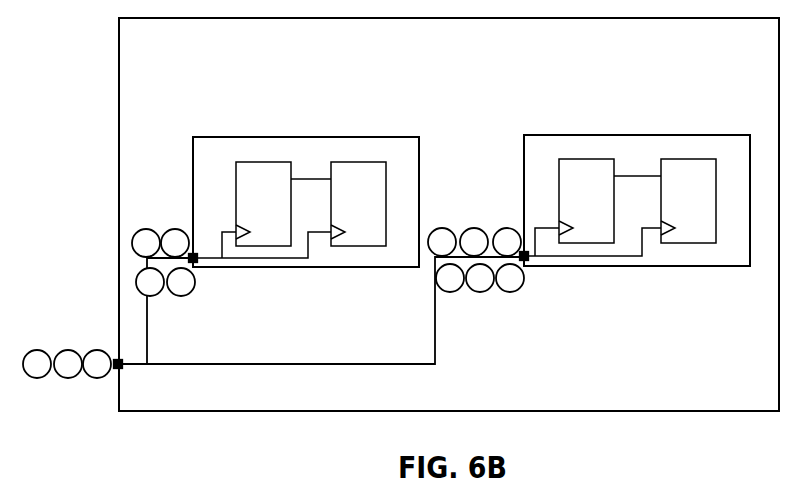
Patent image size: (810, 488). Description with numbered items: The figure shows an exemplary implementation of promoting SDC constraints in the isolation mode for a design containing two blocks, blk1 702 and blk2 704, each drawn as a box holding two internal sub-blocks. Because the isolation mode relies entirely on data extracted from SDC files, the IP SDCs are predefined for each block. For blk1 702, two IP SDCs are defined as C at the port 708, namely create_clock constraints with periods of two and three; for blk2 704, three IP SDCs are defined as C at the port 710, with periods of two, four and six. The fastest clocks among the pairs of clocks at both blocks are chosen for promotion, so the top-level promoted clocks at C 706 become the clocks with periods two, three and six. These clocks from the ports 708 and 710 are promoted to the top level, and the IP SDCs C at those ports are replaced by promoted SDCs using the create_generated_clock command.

The blk1 702 is at (353, 137).
The blk2 704 is at (675, 135).
The top level promoted clocks C 706 is at (116, 368).
The port of blk1 708 is at (195, 261).
The port of blk2 710 is at (526, 259).